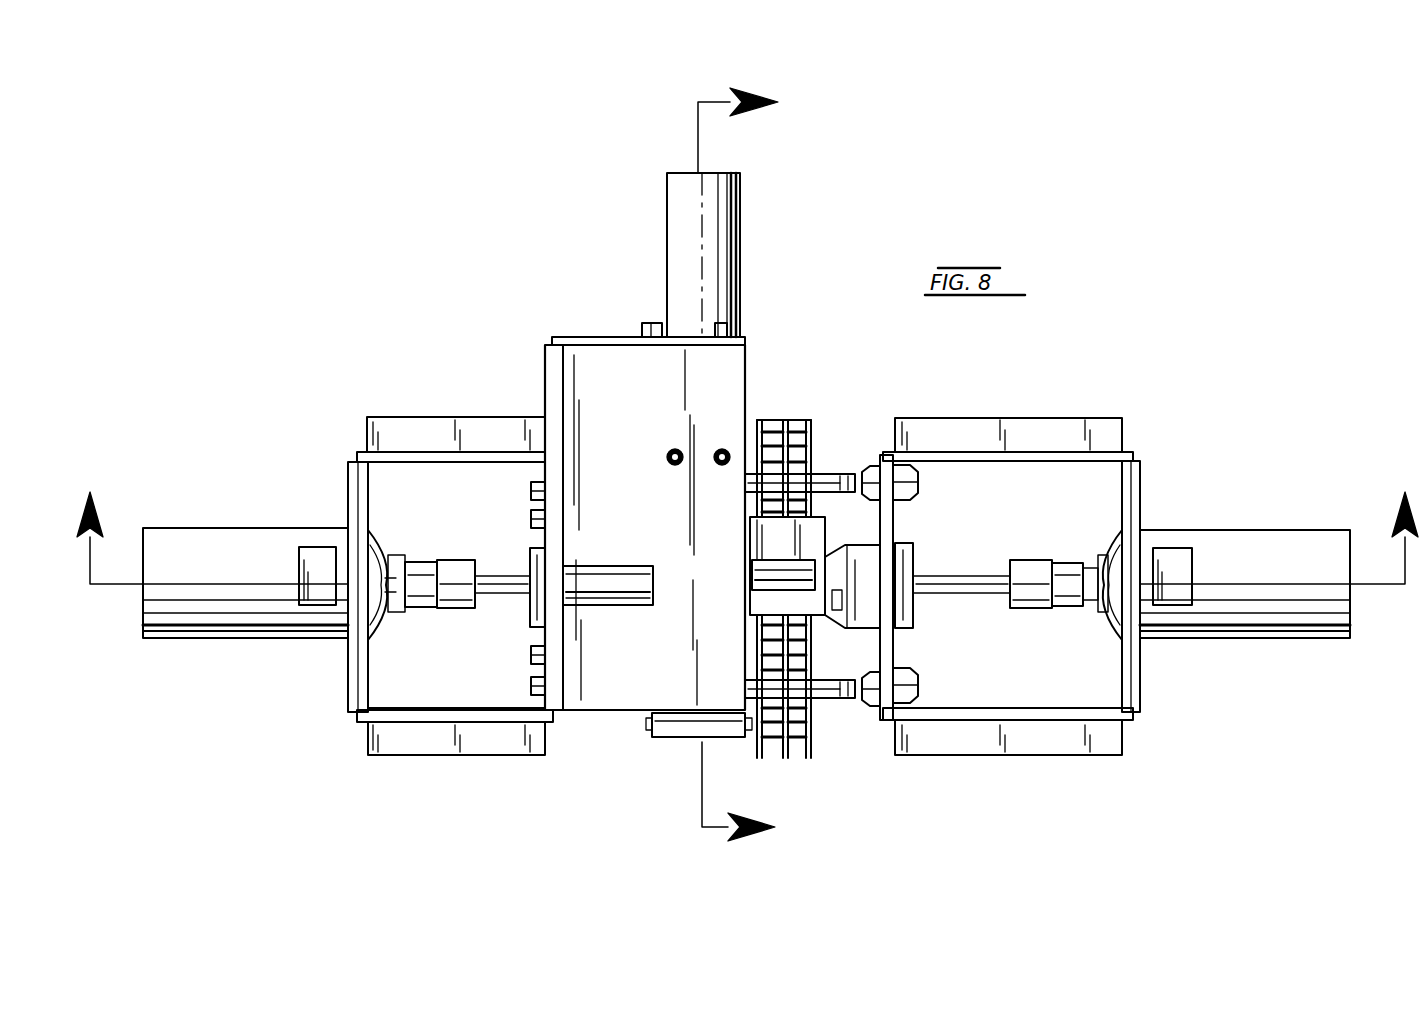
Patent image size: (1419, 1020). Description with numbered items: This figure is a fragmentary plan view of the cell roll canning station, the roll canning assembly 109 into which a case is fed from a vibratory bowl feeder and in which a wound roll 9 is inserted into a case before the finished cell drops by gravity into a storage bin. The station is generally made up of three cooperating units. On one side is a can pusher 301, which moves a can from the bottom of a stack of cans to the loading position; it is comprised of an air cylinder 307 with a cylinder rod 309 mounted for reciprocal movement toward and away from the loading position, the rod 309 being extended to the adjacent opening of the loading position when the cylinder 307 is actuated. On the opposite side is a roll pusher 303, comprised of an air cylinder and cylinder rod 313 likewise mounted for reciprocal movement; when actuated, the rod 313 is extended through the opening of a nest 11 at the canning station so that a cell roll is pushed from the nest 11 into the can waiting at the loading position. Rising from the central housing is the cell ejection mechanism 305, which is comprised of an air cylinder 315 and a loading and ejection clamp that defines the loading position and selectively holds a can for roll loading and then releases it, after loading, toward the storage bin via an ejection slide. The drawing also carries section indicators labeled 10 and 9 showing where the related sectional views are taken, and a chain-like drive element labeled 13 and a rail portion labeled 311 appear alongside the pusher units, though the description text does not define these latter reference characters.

The roll canning assembly 109 is at (746, 465).
The can pusher 301 is at (252, 505).
The roll pusher 303 is at (1193, 507).
The cell ejection mechanism 305 is at (758, 246).
The air cylinder 307 is at (245, 569).
The cylinder rod 309 is at (498, 575).
The right rail strip 311 is at (1245, 570).
The air cylinder with cylinder rod 313 is at (968, 575).
The air cylinder 315 is at (675, 226).
The nest 11 is at (765, 600).
The drive chain 13 is at (812, 446).
The wound roll 9 is at (747, 525).
The section line 10- 10 is at (754, 464).